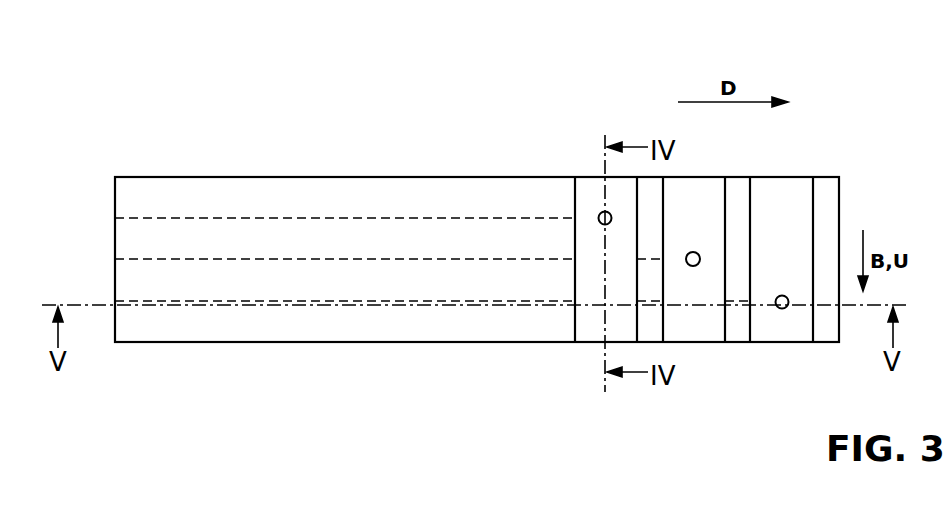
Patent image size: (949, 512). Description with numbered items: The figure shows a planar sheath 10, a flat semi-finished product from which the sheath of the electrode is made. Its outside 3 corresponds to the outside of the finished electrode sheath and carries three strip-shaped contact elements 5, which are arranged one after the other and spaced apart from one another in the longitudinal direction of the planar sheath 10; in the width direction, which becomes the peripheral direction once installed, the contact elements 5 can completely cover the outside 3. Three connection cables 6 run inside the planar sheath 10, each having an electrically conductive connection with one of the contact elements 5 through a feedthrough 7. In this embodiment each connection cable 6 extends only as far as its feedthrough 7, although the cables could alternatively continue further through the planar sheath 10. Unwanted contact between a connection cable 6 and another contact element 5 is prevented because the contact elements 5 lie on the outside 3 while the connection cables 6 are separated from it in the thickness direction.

The planar sheath 10 is at (164, 132).
The outside 3 is at (236, 196).
The connection cable 6 is at (131, 218).
The feedthrough 7 is at (598, 218).
The contact element 5 is at (575, 326).